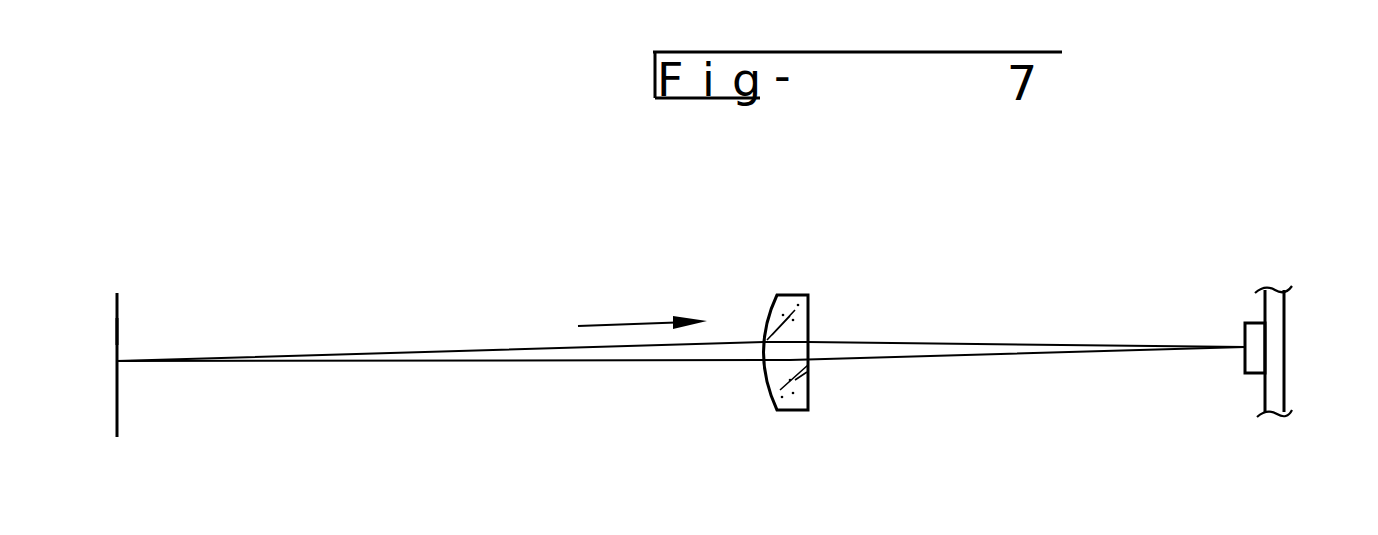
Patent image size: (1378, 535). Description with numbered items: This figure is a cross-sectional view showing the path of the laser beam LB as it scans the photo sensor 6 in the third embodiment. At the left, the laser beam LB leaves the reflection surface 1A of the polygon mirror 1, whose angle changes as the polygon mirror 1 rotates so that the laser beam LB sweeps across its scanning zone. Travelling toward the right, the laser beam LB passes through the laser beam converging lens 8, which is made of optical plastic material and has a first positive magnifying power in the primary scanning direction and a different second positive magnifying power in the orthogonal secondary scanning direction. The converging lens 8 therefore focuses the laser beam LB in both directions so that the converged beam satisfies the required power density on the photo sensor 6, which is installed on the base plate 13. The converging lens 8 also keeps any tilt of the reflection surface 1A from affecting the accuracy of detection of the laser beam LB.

The polygon mirror 1 is at (117, 268).
The reflection surface 1A is at (118, 332).
The laser beam LB is at (607, 363).
The laser beam converging lens 8 is at (798, 295).
The photo sensor 6 is at (1240, 360).
The base plate 13 is at (1287, 300).